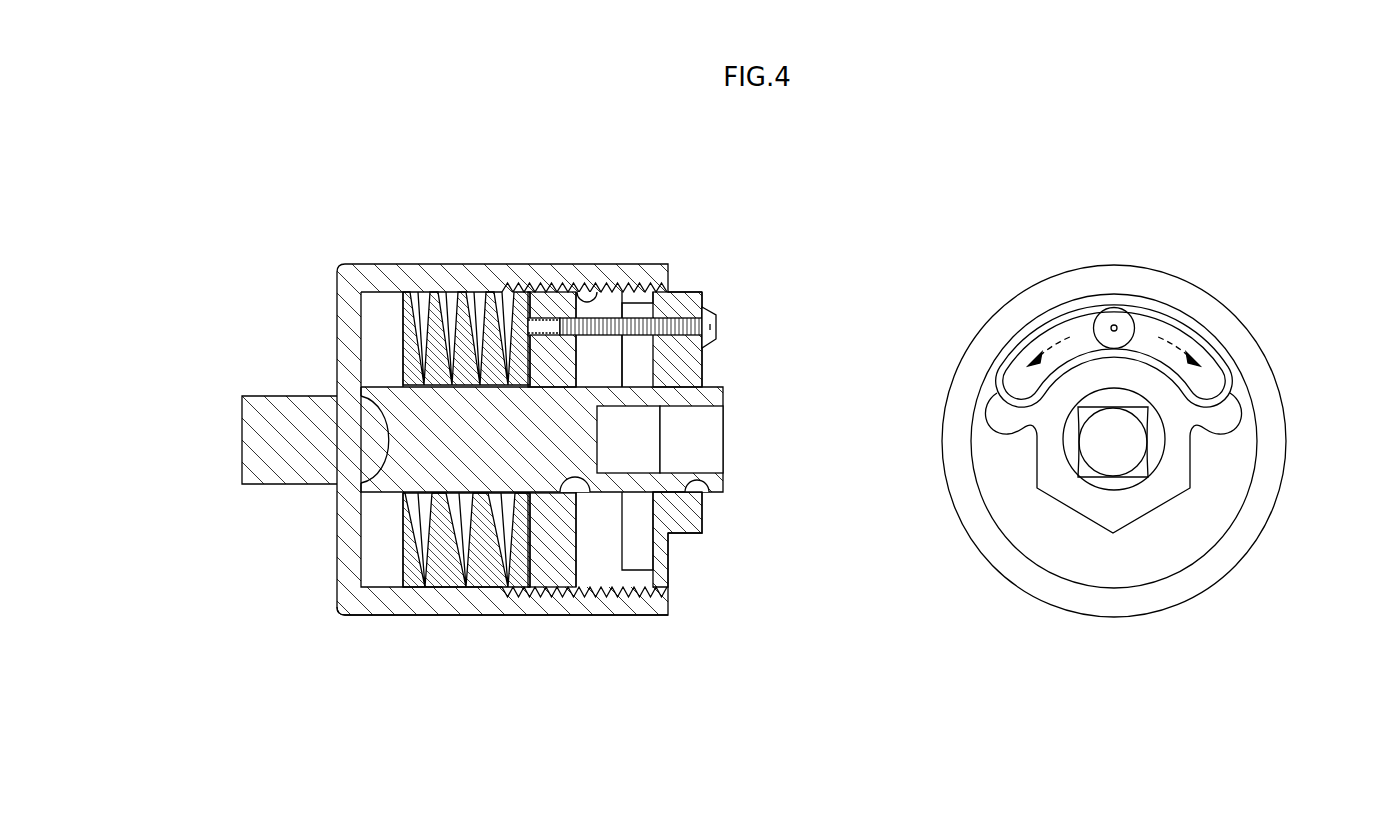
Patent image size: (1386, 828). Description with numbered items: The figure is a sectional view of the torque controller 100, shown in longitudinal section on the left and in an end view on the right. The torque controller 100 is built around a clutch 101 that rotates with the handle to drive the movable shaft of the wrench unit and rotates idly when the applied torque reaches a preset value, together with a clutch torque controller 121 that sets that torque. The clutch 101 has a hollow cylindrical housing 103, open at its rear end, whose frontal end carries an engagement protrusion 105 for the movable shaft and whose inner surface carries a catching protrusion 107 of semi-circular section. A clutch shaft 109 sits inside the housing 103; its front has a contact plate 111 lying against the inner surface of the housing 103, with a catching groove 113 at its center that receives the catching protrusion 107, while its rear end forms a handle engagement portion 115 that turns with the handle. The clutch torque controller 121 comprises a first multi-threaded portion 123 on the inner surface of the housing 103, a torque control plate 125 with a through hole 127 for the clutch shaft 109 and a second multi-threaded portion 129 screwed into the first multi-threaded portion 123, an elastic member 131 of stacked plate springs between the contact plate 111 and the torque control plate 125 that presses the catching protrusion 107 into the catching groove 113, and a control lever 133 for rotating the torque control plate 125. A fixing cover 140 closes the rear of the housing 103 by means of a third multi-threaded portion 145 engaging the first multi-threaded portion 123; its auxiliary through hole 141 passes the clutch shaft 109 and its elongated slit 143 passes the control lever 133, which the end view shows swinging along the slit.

The torque controller 100 is at (573, 153).
The clutch 101 is at (418, 200).
The housing 103 is at (380, 265).
The engagement protrusion 105 is at (250, 452).
The catching protrusion 107 is at (362, 458).
The clutch shaft 109 is at (452, 405).
The contact plate 111 is at (390, 597).
The catching groove 113 is at (385, 443).
The handle engagement portion 115 is at (697, 428).
The clutch torque controller 121 is at (841, 275).
The first multi-threaded portion 123 is at (590, 290).
The torque control plate 125 is at (550, 300).
The through hole 127 is at (592, 484).
The second multi-threaded portion 129 is at (542, 590).
The elastic member 131 is at (473, 305).
The control lever 133 is at (909, 299).
The fixing cover 140 is at (688, 525).
The auxiliary through hole 141 is at (712, 488).
The elongated slit 143 is at (683, 318).
The third multi-threaded portion 145 is at (637, 587).